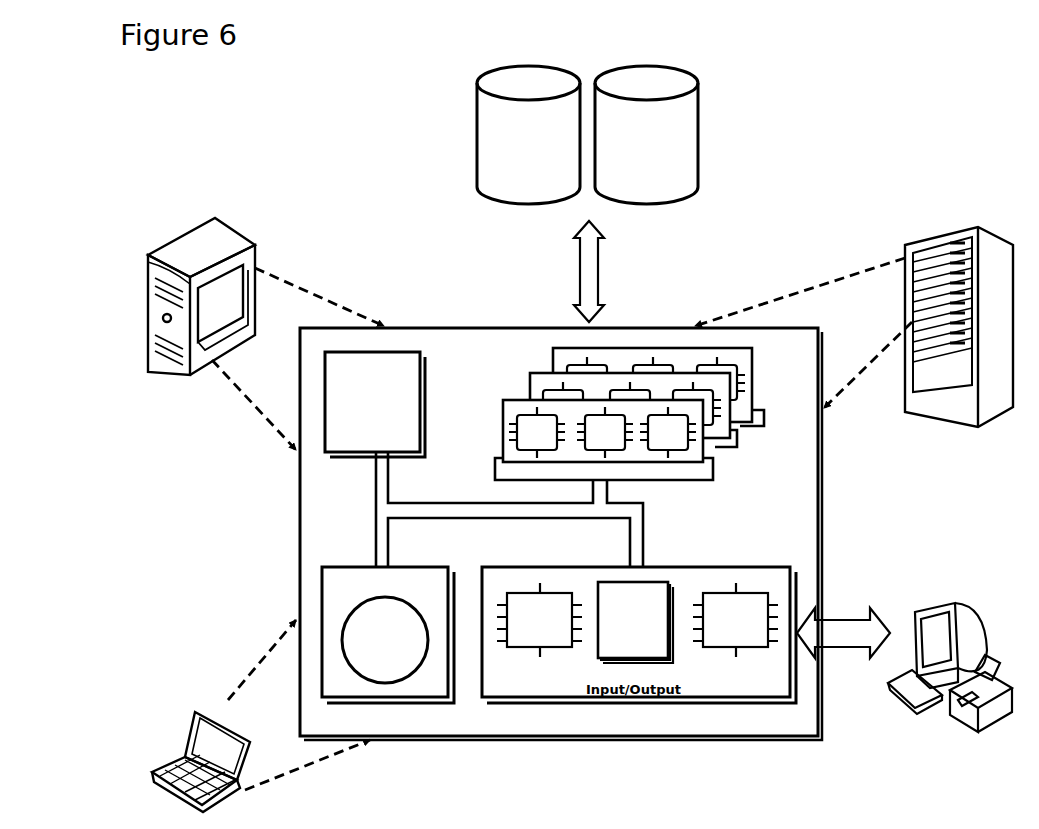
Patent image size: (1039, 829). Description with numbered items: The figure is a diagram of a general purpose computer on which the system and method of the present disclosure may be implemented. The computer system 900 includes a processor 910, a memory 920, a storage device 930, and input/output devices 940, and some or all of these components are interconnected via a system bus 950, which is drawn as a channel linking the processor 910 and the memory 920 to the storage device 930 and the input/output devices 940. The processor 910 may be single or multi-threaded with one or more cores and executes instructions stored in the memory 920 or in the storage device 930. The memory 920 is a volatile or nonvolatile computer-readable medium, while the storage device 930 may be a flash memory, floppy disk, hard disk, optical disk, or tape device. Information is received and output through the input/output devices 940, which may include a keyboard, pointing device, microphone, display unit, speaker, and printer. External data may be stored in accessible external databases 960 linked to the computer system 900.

The computer system 900 is at (230, 222).
The processor 910 is at (375, 404).
The memory 920 is at (748, 440).
The storage device 930 is at (388, 635).
The input/output devices 940 is at (910, 612).
The system bus 950 is at (497, 522).
The external databases 960 is at (587, 135).